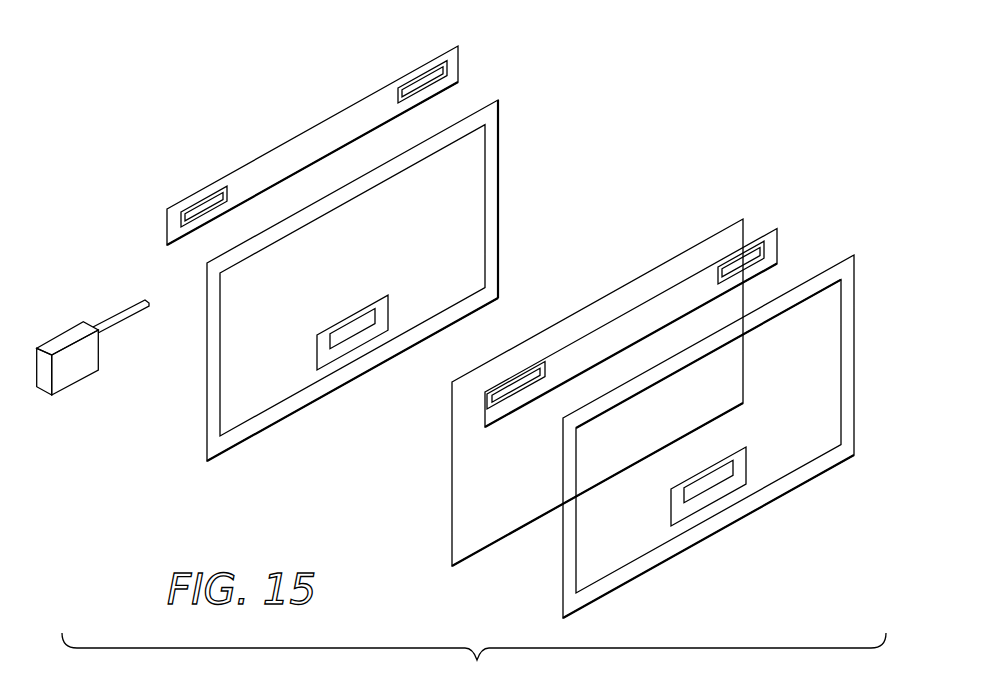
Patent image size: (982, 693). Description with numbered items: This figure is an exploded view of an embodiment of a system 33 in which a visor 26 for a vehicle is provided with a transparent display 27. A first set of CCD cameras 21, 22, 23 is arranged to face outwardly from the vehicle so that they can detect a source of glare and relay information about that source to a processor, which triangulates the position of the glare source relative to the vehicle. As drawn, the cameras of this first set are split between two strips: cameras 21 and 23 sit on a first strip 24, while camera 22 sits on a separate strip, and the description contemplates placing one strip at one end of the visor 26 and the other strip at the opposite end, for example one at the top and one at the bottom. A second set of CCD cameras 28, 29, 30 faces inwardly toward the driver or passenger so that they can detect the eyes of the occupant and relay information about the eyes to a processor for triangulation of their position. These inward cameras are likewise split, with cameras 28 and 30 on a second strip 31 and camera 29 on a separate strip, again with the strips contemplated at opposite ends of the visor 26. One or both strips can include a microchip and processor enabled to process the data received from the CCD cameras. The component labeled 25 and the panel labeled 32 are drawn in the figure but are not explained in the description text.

The CCD camera 21 is at (202, 203).
The CCD camera 22 is at (350, 328).
The CCD camera 23 is at (421, 78).
The first strip 24 is at (165, 227).
The fastener block 25 is at (68, 333).
The visor 26 is at (498, 145).
The transparent display 27 is at (450, 493).
The CCD camera 28 is at (520, 385).
The CCD camera 29 is at (708, 489).
The CCD camera 30 is at (739, 262).
The second strip 31 is at (776, 248).
The front frame panel 32 is at (849, 315).
The system 33 is at (745, 142).